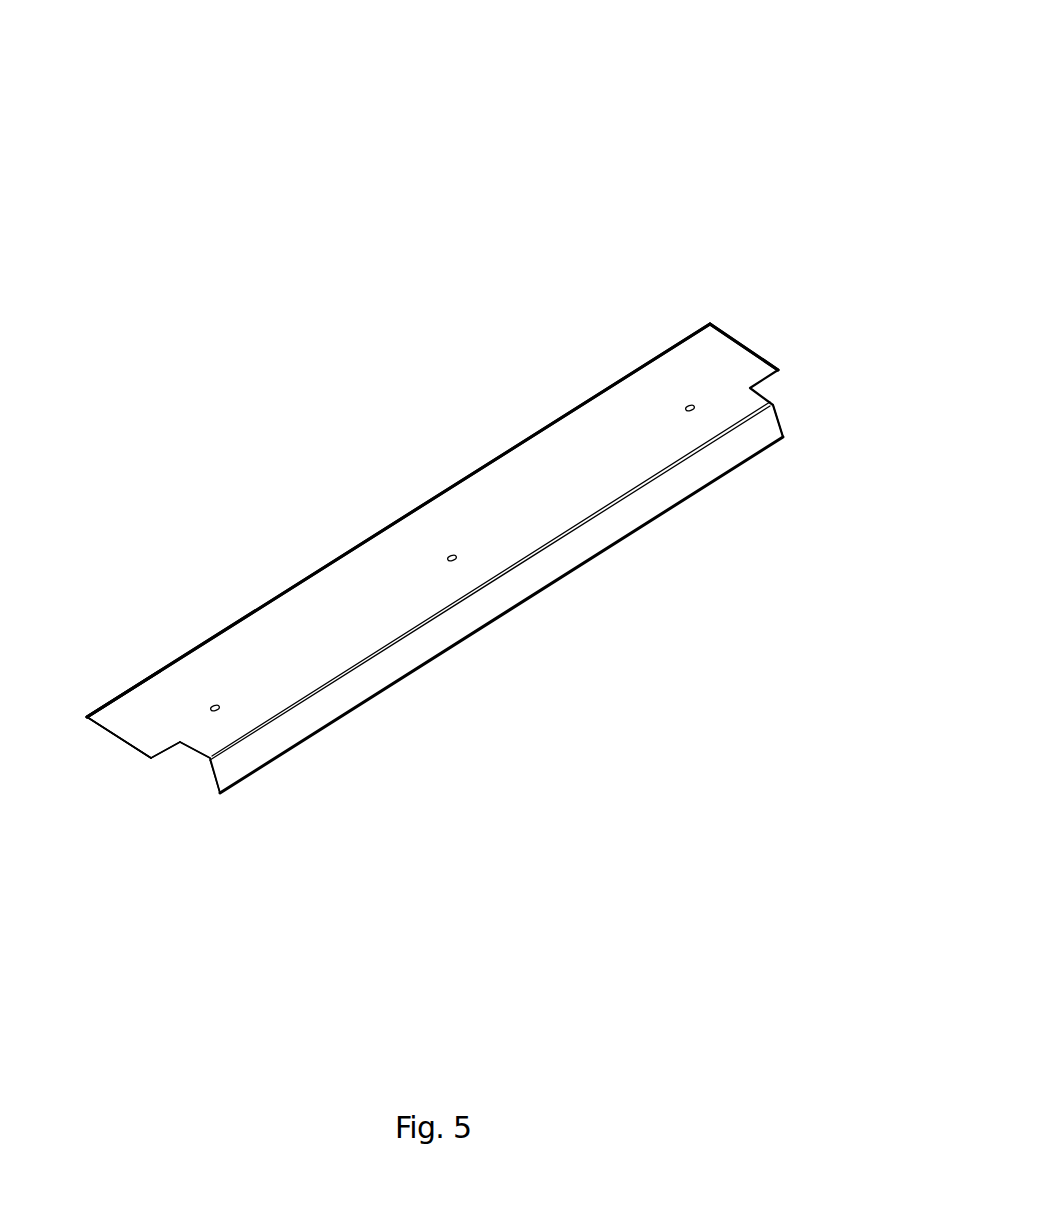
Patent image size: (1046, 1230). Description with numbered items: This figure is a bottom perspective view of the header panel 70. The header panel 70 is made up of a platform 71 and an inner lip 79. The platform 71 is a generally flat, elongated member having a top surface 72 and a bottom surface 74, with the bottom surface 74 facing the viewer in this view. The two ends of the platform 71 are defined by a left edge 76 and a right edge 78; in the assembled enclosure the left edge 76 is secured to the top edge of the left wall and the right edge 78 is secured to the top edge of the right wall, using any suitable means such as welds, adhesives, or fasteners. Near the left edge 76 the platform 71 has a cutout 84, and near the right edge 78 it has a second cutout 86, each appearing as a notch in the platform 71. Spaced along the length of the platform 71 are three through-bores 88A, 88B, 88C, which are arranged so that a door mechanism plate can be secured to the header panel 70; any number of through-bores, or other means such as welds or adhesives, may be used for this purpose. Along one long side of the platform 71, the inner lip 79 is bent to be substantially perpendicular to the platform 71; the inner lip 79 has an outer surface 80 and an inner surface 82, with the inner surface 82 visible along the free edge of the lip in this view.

The header panel 70 is at (670, 75).
The platform 71 is at (580, 443).
The top surface 72 is at (150, 672).
The bottom surface 74 is at (150, 740).
The left edge 76 is at (117, 740).
The right edge 78 is at (748, 345).
The inner lip 79 is at (395, 667).
The outer surface 80 is at (485, 603).
The inner surface 82 is at (555, 585).
The cutout 84 is at (183, 770).
The cutout 86 is at (785, 392).
The through-bore 88A is at (692, 393).
The through-bore 88B is at (455, 547).
The through-bore 88C is at (220, 693).